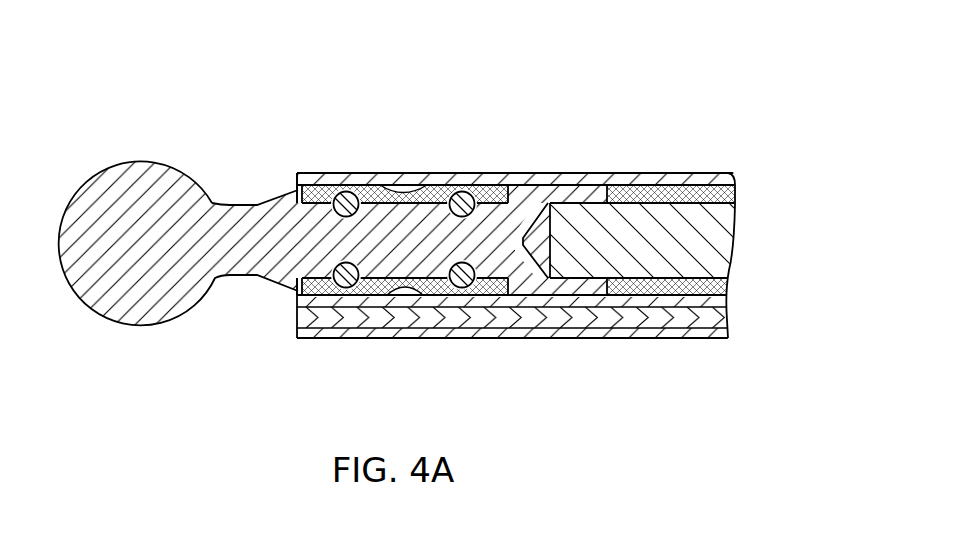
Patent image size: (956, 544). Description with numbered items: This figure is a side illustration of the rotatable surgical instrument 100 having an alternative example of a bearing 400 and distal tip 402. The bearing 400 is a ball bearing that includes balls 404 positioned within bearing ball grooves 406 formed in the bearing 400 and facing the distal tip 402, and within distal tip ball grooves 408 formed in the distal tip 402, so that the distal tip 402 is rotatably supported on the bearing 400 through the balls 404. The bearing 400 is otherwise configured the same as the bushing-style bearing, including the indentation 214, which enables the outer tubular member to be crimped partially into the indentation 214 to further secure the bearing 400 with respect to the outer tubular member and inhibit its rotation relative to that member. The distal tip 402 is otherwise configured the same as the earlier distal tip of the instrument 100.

The rotatable surgical instrument 100 is at (117, 108).
The distal tip 402 is at (165, 363).
The bearing 400 is at (518, 241).
The balls 404 is at (356, 194).
The bearing ball grooves 406 is at (337, 191).
The distal tip ball grooves 408 is at (336, 264).
The indentation 214 is at (412, 293).